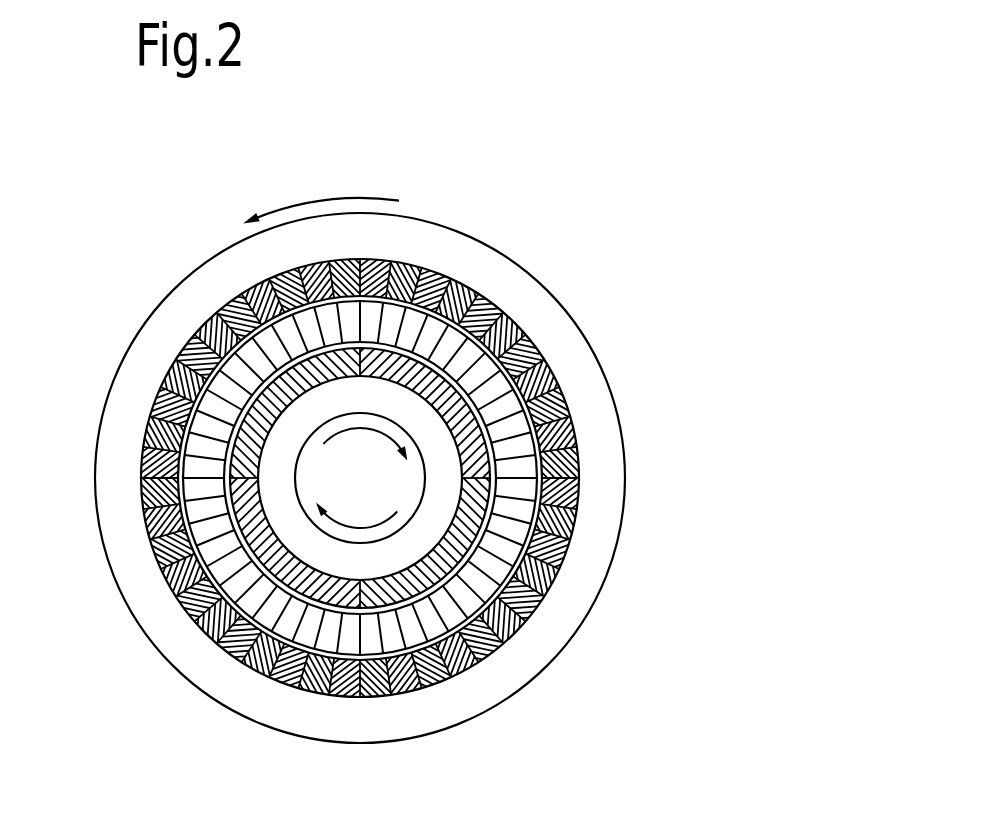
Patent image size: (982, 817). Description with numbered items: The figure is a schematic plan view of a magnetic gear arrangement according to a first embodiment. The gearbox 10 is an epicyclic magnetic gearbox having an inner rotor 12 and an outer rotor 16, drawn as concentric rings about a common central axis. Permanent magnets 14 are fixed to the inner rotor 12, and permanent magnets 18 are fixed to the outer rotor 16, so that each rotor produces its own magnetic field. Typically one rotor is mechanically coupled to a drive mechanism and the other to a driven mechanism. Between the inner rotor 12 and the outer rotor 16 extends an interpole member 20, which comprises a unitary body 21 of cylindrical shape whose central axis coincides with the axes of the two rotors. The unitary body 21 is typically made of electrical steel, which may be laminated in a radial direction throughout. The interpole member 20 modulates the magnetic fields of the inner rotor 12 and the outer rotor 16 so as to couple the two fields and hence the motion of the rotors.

The gearbox 10 is at (536, 204).
The inner rotor 12 is at (280, 505).
The permanent magnets 14 is at (387, 622).
The outer rotor 16 is at (200, 662).
The permanent magnets 18 is at (565, 437).
The interpole member 20 is at (522, 525).
The unitary body 21 is at (428, 327).